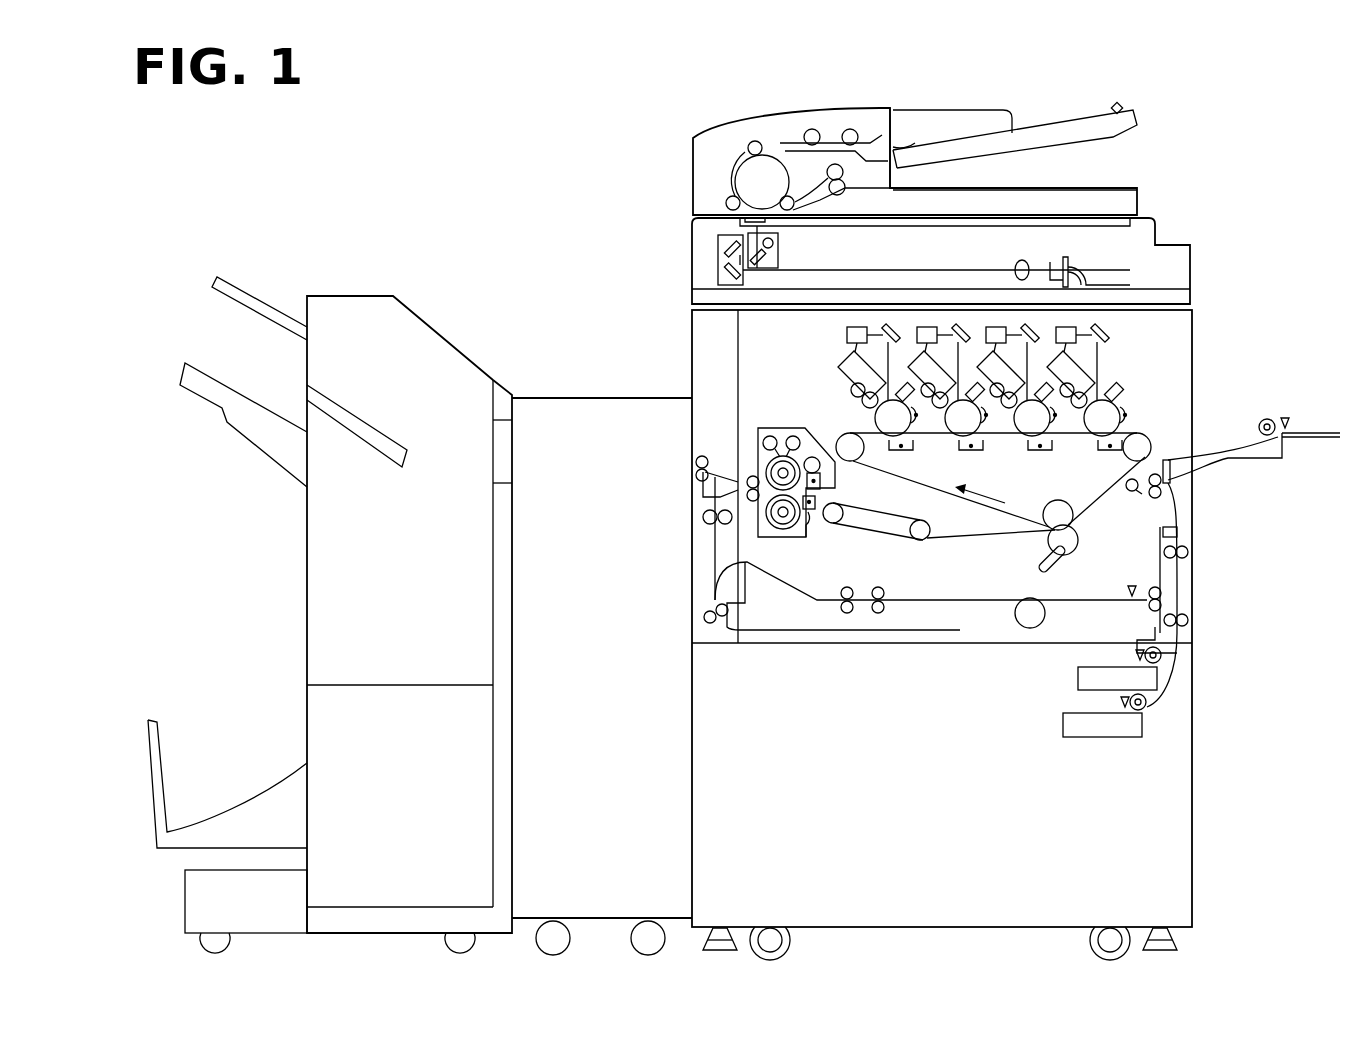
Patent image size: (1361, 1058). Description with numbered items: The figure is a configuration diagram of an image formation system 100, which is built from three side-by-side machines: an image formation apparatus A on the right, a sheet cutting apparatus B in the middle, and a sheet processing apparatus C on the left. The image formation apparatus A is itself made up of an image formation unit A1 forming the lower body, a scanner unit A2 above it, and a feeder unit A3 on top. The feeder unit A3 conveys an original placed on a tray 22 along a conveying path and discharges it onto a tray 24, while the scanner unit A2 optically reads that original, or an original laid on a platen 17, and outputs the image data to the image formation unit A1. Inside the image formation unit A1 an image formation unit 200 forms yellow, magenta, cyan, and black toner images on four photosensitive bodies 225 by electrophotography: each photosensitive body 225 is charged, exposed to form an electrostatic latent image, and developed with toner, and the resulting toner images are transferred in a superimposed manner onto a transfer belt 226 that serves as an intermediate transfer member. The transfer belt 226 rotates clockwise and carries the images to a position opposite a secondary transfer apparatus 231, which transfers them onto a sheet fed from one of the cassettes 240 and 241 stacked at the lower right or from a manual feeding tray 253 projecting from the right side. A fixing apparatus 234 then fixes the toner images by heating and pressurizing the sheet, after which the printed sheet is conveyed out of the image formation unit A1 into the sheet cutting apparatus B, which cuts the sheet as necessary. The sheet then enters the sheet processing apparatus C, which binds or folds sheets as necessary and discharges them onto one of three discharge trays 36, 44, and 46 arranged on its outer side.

The image formation system 100 is at (1107, 96).
The image formation apparatus A is at (1210, 134).
The image formation unit A1 is at (1217, 332).
The scanner unit A2 is at (1178, 264).
The feeder unit A3 is at (712, 110).
The tray 22 is at (1030, 127).
The tray 24 is at (1073, 190).
The platen 17 is at (857, 233).
The image formation unit 200 is at (808, 362).
The photosensitive body 225 is at (876, 414).
The transfer belt 226 is at (866, 465).
The secondary transfer apparatus 231 is at (1080, 537).
The fixing apparatus 234 is at (770, 428).
The cassette 240 is at (1078, 680).
The cassette 241 is at (1063, 728).
The manual feeding tray 253 is at (1315, 440).
The sheet cutting apparatus B is at (584, 388).
The sheet processing apparatus C is at (392, 272).
The discharge tray 46 is at (246, 288).
The discharge tray 36 is at (186, 392).
The discharge tray 44 is at (246, 803).